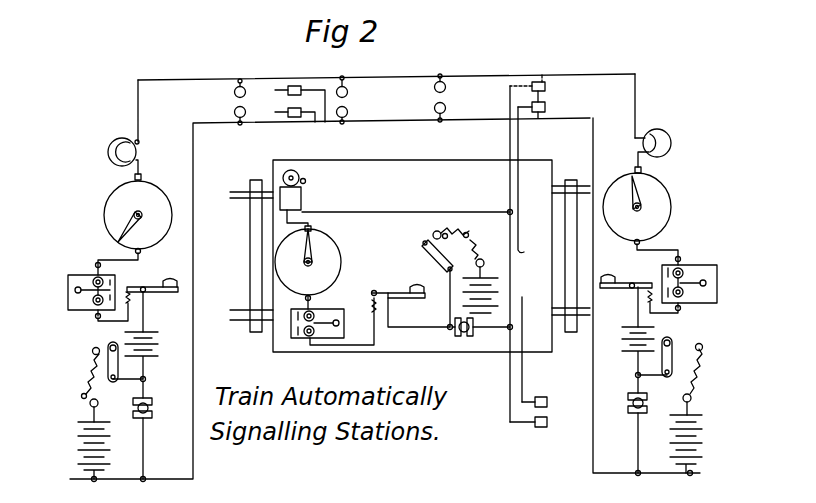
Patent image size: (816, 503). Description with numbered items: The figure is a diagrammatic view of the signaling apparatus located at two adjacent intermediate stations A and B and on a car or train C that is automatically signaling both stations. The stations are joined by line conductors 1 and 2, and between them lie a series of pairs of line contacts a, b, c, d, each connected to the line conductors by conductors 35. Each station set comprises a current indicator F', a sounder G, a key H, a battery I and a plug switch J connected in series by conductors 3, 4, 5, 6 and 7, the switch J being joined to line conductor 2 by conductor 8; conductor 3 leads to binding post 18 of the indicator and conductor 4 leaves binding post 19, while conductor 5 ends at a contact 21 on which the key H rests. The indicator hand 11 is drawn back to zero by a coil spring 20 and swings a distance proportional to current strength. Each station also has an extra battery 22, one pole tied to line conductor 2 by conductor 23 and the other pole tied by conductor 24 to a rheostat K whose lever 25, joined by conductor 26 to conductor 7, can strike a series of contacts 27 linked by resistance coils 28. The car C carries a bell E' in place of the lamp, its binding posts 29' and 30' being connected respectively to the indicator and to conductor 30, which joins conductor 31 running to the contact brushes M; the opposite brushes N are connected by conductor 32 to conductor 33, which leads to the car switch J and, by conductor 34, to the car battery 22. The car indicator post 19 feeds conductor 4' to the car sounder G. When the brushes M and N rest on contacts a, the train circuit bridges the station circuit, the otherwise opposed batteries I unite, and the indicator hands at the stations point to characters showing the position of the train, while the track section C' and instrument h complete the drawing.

The line conductor 1 is at (386, 88).
The line conductor 2 is at (385, 278).
The connecting conductor 3 is at (387, 161).
The connecting conductor 4 is at (388, 254).
The connecting conductor 5 is at (388, 318).
The connecting conductor 6 is at (146, 306).
The connecting conductor 7 is at (146, 379).
The conductor 8 is at (146, 436).
The indicating hand 11 is at (660, 176).
The binding post 18 is at (142, 178).
The binding post 19 is at (142, 252).
The coil spring 20 is at (295, 227).
The contact 21 is at (389, 279).
The battery 22 is at (710, 444).
The conductor 23 is at (90, 478).
The conductor 24 is at (88, 410).
The lever 25 is at (424, 252).
The conductor 26 is at (390, 331).
The contacts 27 is at (99, 405).
The resistance coils 28 is at (82, 384).
The binding post 29' is at (267, 210).
The conductor 30 is at (407, 206).
The binding post 30' is at (325, 194).
The conductor 31 is at (532, 180).
The conductor 32 is at (510, 368).
The conductor 33 is at (499, 254).
The conductor 34 is at (480, 321).
The conductors 35 is at (448, 80).
The conductor 4' is at (327, 299).
The intermediate station A is at (44, 213).
The intermediate station B is at (725, 192).
The car or train C is at (412, 256).
The track section C' is at (410, 227).
The bell E' is at (386, 146).
The indicator dial F' is at (391, 234).
The sounder G is at (66, 292).
The key H is at (389, 288).
The battery I is at (159, 346).
The plug switch J is at (154, 404).
The rheostat K is at (392, 313).
The contact brushes M is at (405, 249).
The contact brushes N is at (412, 253).
The pair of line contacts a is at (560, 93).
The pair of line contacts b is at (432, 90).
The pair of line contacts c is at (350, 100).
The pair of line contacts d is at (234, 96).
The track instrument h is at (293, 190).